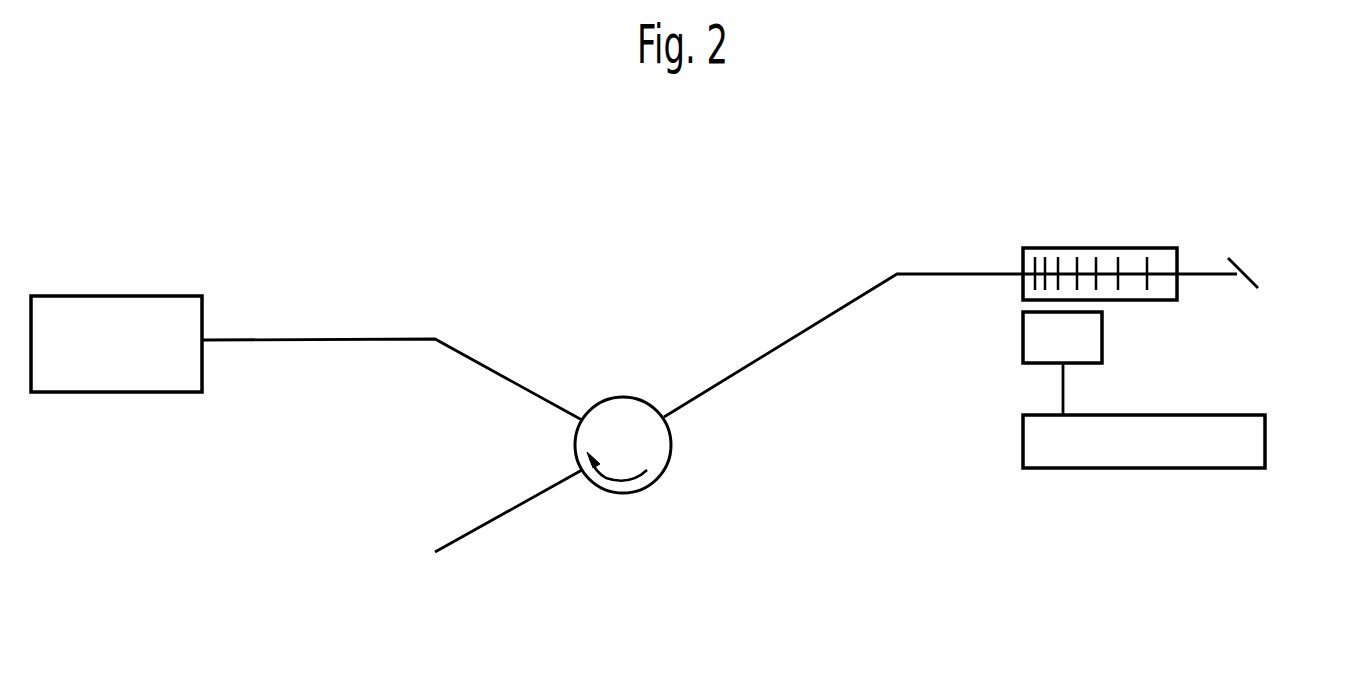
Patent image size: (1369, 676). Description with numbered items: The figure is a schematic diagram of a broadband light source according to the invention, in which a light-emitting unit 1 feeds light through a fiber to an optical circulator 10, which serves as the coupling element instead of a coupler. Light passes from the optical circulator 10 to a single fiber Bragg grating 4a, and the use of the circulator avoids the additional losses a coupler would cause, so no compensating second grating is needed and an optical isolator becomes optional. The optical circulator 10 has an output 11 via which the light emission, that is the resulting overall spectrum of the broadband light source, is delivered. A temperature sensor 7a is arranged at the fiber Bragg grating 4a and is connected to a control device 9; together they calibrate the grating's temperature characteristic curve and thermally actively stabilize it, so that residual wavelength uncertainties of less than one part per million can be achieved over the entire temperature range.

The light source 1 is at (135, 296).
The optical circulator 10 is at (618, 398).
The output 11 is at (495, 525).
The fiber Bragg grating 4a is at (1065, 247).
The temperature sensor 7a is at (1102, 335).
The control device 9 is at (1265, 440).